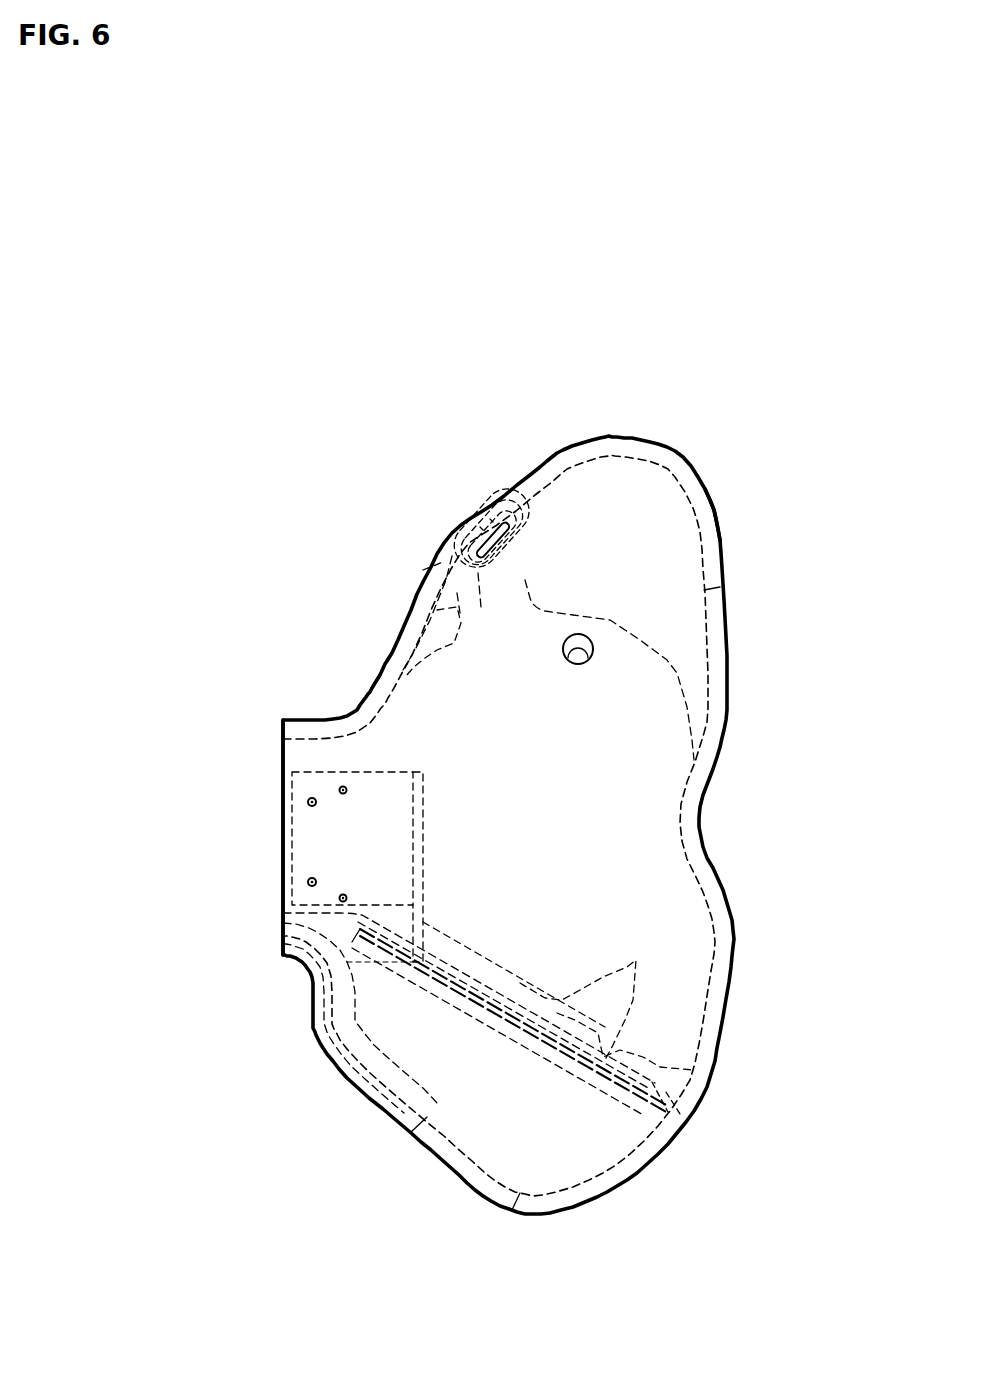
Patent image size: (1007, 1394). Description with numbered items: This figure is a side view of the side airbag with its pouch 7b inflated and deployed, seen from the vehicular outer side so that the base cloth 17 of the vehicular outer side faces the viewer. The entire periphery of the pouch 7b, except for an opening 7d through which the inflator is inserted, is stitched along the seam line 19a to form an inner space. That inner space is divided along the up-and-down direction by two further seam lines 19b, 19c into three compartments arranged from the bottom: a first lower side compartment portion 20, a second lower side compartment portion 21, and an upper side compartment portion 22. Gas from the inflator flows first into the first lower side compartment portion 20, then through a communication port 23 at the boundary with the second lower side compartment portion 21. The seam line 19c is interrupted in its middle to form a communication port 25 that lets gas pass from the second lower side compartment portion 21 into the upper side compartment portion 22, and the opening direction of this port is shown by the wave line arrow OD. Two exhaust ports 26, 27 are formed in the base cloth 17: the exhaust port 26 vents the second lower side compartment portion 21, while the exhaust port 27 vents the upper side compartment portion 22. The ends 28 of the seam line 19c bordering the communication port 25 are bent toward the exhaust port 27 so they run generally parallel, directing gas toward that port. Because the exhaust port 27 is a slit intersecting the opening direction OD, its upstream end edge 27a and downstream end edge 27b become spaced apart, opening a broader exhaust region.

The pouch 7b is at (672, 443).
The base cloth 17 is at (712, 520).
The seam line 19a is at (720, 587).
The seam line 19b is at (637, 1090).
The seam line 19c is at (436, 630).
The opening 7d is at (283, 833).
The communication port 23 is at (634, 968).
The ends of the stitch or seam lines 28 is at (437, 610).
The communication port 25 is at (423, 570).
The exhaust port 27 is at (480, 538).
The end edge 27a is at (490, 519).
The end edge 27b is at (480, 527).
The opening direction OD is at (494, 584).
The exhaust port 26 is at (569, 664).
The upper side compartment portion 22 is at (635, 522).
The second lower side compartment portion 21 is at (575, 853).
The first lower side compartment portion 20 is at (510, 1114).